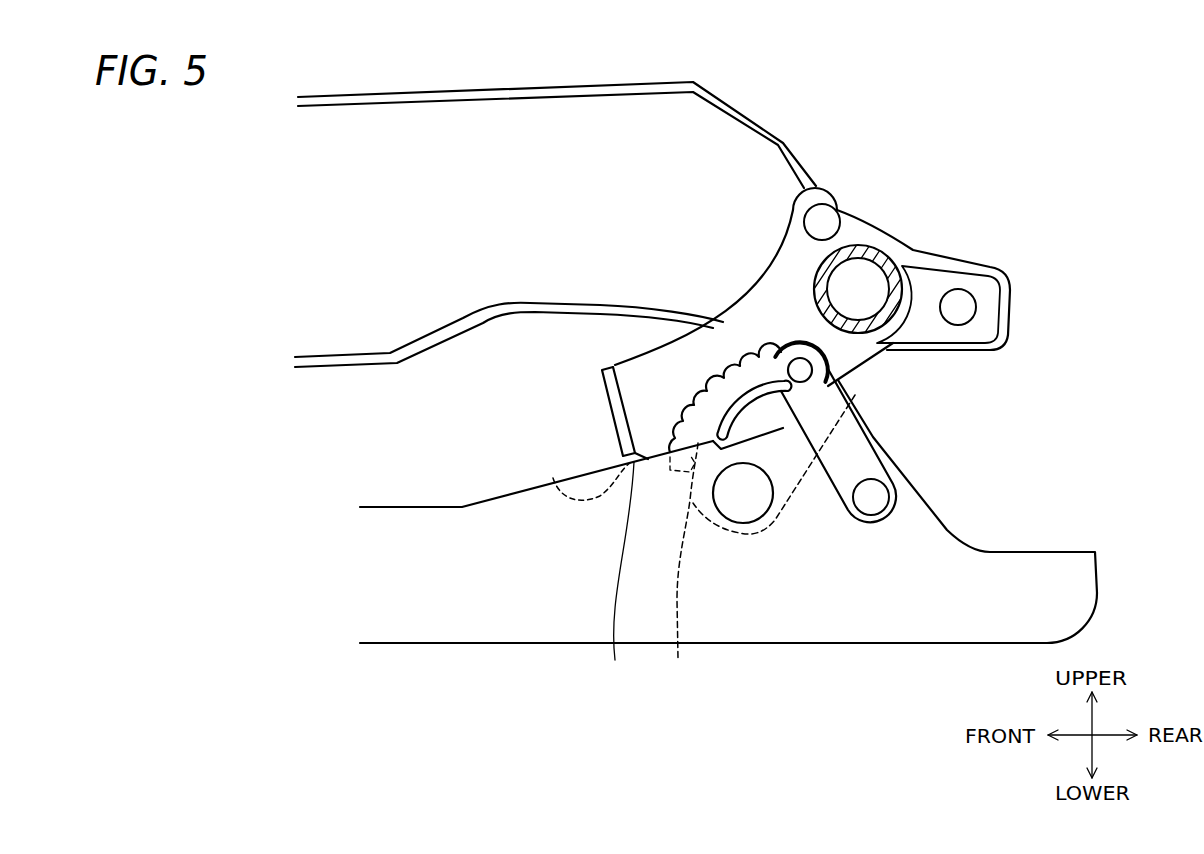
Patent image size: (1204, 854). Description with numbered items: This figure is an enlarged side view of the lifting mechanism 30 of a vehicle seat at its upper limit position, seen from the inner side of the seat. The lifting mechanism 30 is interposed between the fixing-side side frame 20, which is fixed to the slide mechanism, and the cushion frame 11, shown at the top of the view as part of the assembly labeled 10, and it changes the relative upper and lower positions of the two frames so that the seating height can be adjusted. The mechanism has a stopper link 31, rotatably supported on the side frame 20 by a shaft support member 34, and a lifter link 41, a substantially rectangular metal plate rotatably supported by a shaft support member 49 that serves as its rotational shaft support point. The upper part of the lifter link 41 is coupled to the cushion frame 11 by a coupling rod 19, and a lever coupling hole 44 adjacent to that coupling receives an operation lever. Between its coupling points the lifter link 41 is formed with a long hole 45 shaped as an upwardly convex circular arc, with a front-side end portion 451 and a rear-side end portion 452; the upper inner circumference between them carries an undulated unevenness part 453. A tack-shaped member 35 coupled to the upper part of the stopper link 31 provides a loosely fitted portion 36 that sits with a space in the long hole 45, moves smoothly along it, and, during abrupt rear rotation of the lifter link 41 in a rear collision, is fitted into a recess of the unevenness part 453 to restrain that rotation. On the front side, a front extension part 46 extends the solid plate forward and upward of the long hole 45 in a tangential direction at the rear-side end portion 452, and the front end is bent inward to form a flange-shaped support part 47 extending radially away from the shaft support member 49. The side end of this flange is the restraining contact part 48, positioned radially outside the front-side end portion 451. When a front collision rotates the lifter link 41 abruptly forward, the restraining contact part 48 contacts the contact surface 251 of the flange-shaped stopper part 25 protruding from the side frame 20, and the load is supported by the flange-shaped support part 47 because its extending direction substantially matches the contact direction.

The seat back frame 10 is at (557, 110).
The cushion frame 11 is at (728, 127).
The coupling rod 19 is at (863, 246).
The fixing-side side frame 20 is at (851, 617).
The stopper part 25 is at (553, 478).
The contact surface 251 is at (617, 465).
The lifting mechanism 30 is at (920, 440).
The stopper link 31 is at (863, 450).
The shaft support member 34 is at (875, 497).
The tack-shaped member 35 is at (876, 390).
The loosely fitted portion 36 is at (806, 384).
The lifter link 41 is at (771, 294).
The lever coupling hole 44 is at (818, 212).
The long hole 45 is at (775, 473).
The front-side end portion 451 is at (757, 544).
The rear-side end portion 452 is at (832, 366).
The unevenness part 453 is at (718, 365).
The front extension part 46 is at (633, 375).
The flange-shaped support part 47 is at (604, 396).
The restraining contact part 48 is at (618, 577).
The shaft support member 49 is at (740, 503).